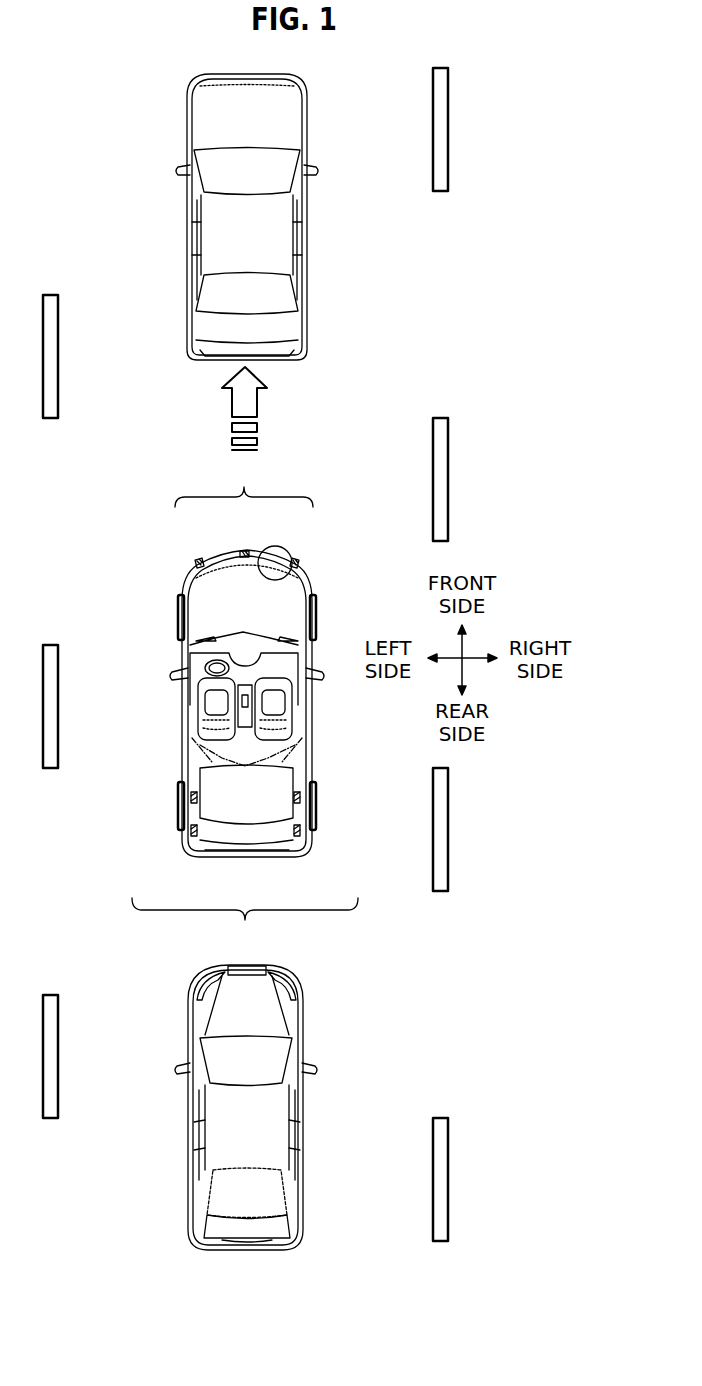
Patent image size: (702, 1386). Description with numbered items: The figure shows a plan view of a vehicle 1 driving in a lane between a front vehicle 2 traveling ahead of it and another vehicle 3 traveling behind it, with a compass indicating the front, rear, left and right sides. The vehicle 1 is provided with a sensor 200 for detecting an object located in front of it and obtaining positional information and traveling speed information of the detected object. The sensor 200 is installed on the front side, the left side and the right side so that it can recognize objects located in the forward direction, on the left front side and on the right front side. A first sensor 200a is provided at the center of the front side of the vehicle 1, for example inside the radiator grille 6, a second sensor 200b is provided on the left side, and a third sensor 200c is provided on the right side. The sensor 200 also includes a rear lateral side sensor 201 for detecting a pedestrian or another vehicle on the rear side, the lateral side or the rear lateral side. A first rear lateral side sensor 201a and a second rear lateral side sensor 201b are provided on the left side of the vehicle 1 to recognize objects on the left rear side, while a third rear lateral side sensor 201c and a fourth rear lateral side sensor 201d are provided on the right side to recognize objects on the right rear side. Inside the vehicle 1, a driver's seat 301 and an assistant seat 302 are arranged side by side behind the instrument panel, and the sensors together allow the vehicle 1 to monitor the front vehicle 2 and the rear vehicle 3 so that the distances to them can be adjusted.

The vehicle 1 is at (304, 610).
The front vehicle 2 is at (298, 207).
The rear vehicle 3 is at (297, 1103).
The radiator grille 6 is at (285, 578).
The sensor 200 is at (244, 483).
The first sensor 200a is at (243, 551).
The second sensor 200b is at (198, 560).
The third sensor 200c is at (292, 560).
The rear lateral side sensor 201 is at (245, 923).
The first rear lateral side sensor 201a is at (192, 803).
The second rear lateral side sensor 201b is at (194, 834).
The third rear lateral side sensor 201c is at (300, 803).
The fourth rear lateral side sensor 201d is at (298, 834).
The driver's seat 301 is at (200, 720).
The assistant seat 302 is at (288, 720).